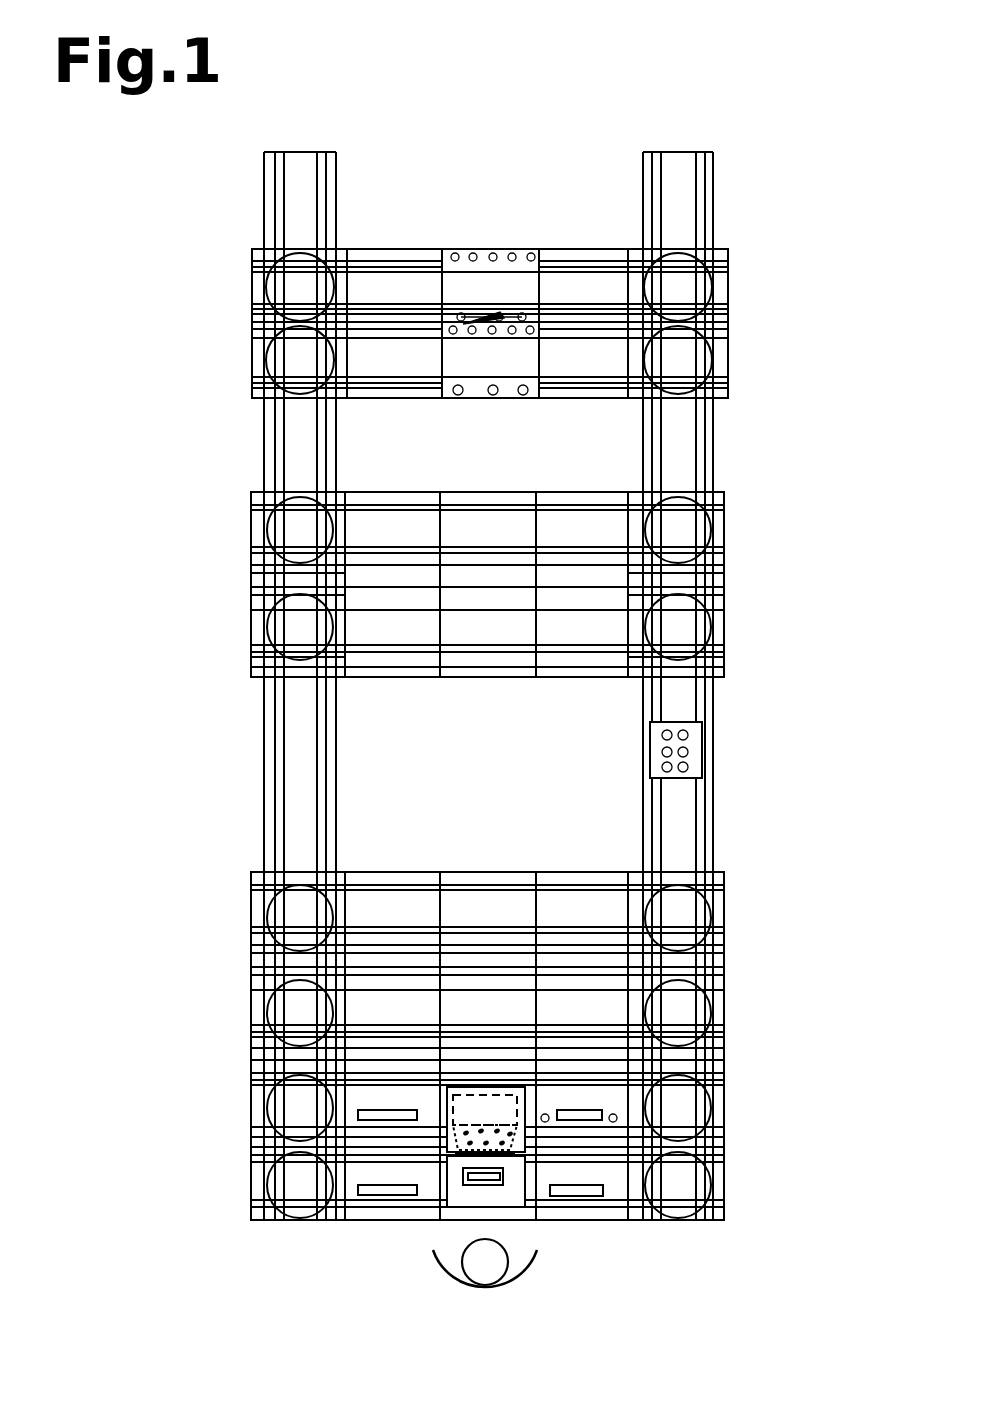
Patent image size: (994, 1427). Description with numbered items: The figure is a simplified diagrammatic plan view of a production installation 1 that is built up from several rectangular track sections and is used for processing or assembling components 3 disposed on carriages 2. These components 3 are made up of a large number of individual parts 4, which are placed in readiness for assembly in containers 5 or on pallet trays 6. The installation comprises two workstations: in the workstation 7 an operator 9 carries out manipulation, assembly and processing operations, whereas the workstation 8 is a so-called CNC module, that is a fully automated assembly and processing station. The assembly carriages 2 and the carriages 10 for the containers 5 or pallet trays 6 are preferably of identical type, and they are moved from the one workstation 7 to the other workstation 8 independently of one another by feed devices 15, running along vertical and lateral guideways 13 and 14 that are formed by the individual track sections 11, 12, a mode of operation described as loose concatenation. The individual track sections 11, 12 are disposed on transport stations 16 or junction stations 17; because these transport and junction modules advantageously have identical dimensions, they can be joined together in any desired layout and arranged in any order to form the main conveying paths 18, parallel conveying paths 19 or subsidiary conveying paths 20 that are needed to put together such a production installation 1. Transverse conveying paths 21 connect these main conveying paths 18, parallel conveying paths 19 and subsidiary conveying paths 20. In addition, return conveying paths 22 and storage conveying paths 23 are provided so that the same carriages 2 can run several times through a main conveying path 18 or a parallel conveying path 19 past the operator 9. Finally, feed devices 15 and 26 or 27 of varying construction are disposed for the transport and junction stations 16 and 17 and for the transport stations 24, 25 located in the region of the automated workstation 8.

The production installation 1 is at (810, 108).
The carriages 2 is at (449, 1146).
The components 3 is at (488, 1149).
The individual parts 4 is at (685, 735).
The containers 5 is at (584, 1258).
The pallet trays 6 is at (574, 1014).
The workstation 7 is at (507, 1188).
The workstation 8 is at (506, 672).
The operator 9 is at (488, 1270).
The carriages 10 is at (522, 1092).
The track section 11 is at (550, 890).
The track section 12 is at (388, 910).
The vertical guideway 13 is at (590, 1087).
The lateral guideway 14 is at (618, 1117).
The feed devices 15 is at (588, 1196).
The transport stations 16 is at (374, 875).
The junction stations 17 is at (254, 913).
The main conveying paths 18 is at (606, 405).
The parallel conveying paths 19 is at (358, 1223).
The subsidiary conveying paths 20 is at (385, 1155).
The transverse conveying paths 21 is at (462, 1076).
The return conveying paths 22 is at (376, 670).
The storage conveying paths 23 is at (463, 1013).
The transport station 24 is at (503, 356).
The transport station 25 is at (452, 297).
The feed device 26 is at (509, 303).
The feed device 27 is at (450, 399).